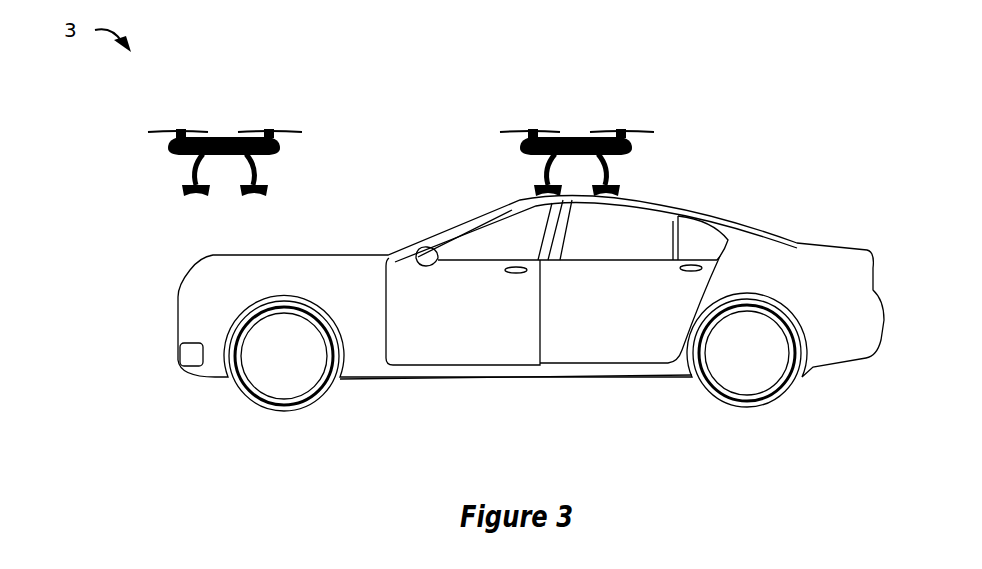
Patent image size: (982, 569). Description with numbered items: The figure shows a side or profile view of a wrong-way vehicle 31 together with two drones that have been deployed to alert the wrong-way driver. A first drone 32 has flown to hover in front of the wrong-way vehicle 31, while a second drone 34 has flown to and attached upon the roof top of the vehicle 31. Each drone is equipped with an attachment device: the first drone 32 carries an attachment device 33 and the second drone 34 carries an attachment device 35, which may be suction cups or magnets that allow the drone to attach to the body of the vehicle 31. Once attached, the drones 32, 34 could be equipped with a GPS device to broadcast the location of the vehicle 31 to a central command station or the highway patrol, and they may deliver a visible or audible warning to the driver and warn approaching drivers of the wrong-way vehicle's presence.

The wrong-way vehicle 31 is at (482, 326).
The first drone 32 is at (168, 142).
The attachment device 33 is at (182, 183).
The second drone 34 is at (520, 142).
The attachment device 35 is at (534, 183).